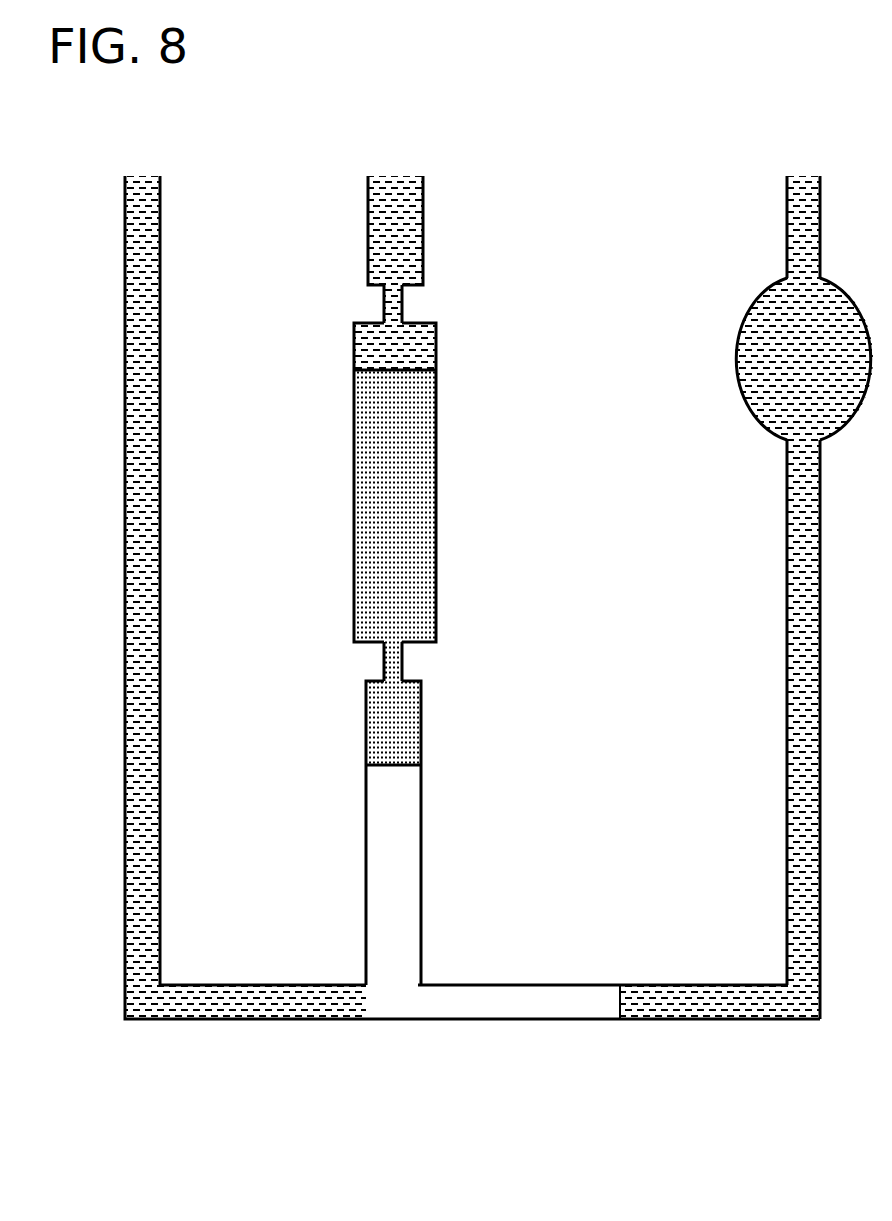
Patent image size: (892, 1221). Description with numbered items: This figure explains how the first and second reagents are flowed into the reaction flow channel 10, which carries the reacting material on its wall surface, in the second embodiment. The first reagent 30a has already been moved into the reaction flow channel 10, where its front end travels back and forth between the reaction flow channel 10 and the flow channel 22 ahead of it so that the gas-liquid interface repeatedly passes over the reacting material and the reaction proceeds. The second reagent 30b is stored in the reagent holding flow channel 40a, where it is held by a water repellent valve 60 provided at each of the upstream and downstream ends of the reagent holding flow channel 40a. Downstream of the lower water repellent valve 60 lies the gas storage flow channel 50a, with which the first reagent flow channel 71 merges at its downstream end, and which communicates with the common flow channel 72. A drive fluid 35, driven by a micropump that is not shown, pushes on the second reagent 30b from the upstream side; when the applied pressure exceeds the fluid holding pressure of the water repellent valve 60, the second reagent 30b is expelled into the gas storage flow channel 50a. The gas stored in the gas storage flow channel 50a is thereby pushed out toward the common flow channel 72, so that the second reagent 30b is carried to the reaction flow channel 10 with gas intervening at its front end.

The reaction flow channel 10 is at (748, 420).
The flow channel 22 is at (786, 222).
The first reagent 30a is at (786, 718).
The second reagent 30b is at (420, 542).
The drive fluid 35 is at (410, 232).
The reagent holding flow channel 40a is at (437, 408).
The gas storage flow channel 50a is at (421, 821).
The water repellent valve 60 is at (396, 298).
The first reagent flow channel 71 is at (161, 579).
The common flow channel 72 is at (668, 985).